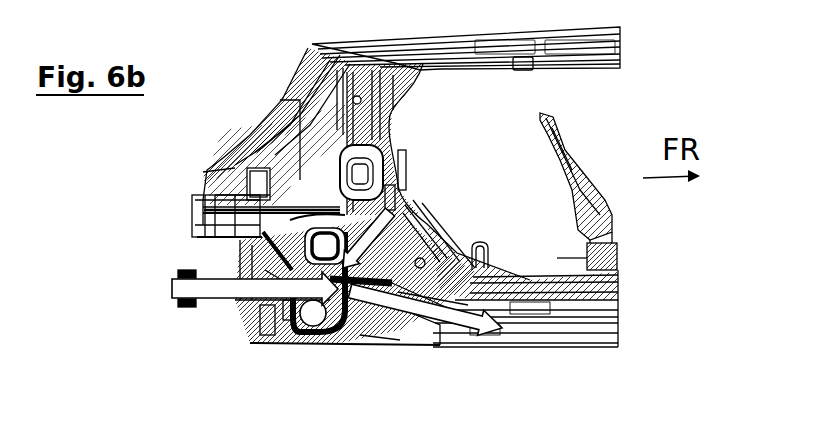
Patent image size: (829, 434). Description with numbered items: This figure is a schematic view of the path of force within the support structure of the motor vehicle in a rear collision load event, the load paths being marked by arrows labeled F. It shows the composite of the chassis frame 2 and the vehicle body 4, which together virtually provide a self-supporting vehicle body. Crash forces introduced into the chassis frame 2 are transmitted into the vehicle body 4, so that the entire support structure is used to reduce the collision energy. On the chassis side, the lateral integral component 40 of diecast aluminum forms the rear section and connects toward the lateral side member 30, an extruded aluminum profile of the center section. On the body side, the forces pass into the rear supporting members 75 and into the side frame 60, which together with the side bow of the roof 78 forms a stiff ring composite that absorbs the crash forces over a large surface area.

The vehicle body 4 is at (306, 48).
The rear supporting members 75 is at (278, 213).
The lateral integral components 40 is at (343, 334).
The chassis frame 2 is at (389, 340).
The roof 78 is at (433, 249).
The side frame 60 is at (553, 416).
The right lateral side member 30 is at (581, 337).